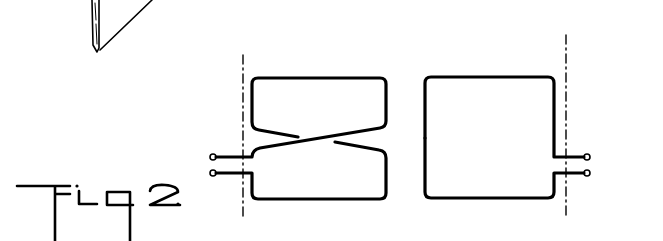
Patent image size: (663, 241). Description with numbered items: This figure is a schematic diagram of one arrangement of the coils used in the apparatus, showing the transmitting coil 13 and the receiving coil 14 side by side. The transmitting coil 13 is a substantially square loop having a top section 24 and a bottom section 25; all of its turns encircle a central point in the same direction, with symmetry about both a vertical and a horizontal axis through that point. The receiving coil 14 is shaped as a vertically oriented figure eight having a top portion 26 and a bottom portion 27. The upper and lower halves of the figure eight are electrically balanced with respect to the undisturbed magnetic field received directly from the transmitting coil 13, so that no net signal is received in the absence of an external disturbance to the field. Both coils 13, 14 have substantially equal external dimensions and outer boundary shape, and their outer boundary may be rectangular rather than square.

The transmitting coil 13 is at (507, 108).
The receiving coil 14 is at (298, 105).
The top section 24 is at (531, 76).
The bottom section 25 is at (500, 198).
The top portion 26 is at (323, 78).
The bottom portion 27 is at (330, 198).